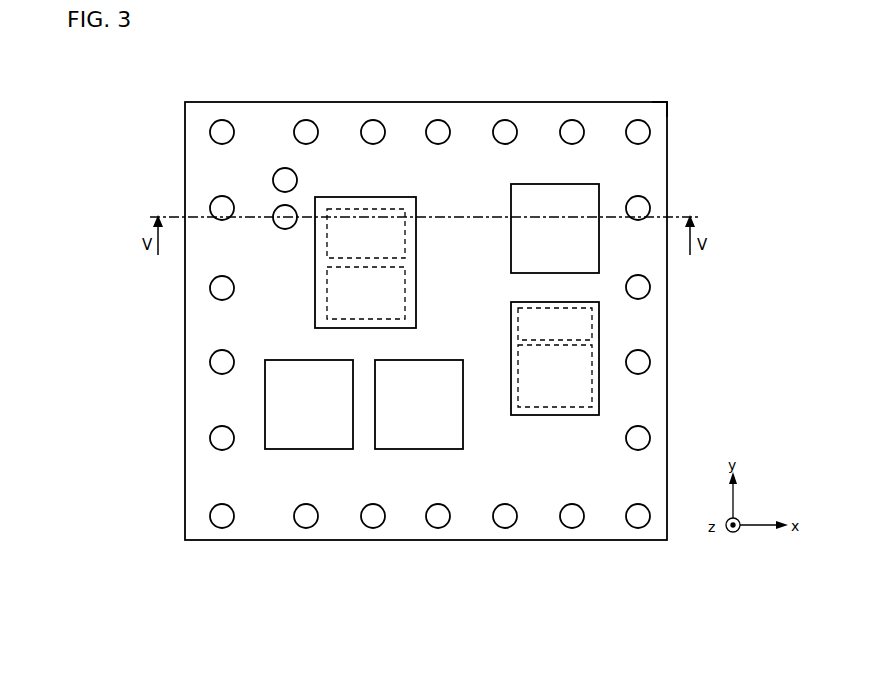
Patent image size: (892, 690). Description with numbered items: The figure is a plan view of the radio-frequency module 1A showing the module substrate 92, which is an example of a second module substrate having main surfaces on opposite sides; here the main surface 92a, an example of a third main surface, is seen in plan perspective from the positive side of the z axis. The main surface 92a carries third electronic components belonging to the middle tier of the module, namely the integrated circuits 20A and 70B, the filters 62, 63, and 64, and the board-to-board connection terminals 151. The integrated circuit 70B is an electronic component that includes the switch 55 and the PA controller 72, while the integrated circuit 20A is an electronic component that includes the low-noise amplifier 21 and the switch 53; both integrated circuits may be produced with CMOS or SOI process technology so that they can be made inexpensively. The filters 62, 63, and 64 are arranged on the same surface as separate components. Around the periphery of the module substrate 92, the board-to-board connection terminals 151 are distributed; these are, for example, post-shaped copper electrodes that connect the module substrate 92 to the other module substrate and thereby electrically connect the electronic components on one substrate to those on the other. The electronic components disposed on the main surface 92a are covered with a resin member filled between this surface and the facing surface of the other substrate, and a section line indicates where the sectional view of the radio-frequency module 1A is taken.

The radio-frequency module 1A is at (712, 76).
The module substrate 92 is at (466, 102).
The main surface 92a is at (618, 112).
The board-to-board connection terminals 151 is at (298, 121).
The integrated circuit 70B is at (355, 197).
The PA controller 72 is at (406, 225).
The switch 55 is at (406, 280).
The filter 63 is at (540, 184).
The integrated circuit 20A is at (540, 302).
The switch 53 is at (590, 320).
The low-noise amplifier 21 is at (590, 375).
The filter 64 is at (315, 360).
The filter 62 is at (408, 360).